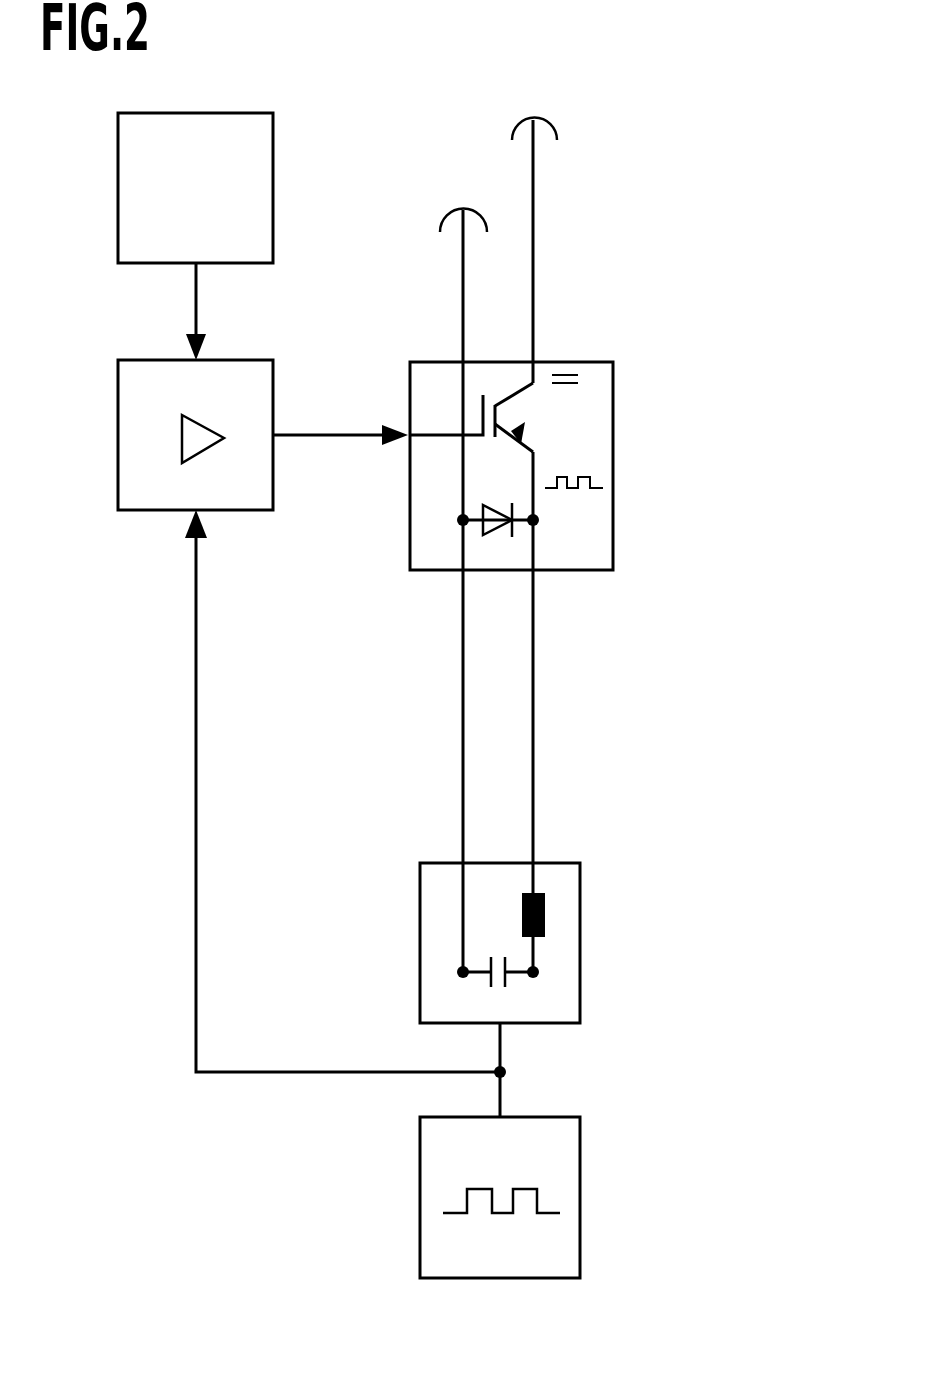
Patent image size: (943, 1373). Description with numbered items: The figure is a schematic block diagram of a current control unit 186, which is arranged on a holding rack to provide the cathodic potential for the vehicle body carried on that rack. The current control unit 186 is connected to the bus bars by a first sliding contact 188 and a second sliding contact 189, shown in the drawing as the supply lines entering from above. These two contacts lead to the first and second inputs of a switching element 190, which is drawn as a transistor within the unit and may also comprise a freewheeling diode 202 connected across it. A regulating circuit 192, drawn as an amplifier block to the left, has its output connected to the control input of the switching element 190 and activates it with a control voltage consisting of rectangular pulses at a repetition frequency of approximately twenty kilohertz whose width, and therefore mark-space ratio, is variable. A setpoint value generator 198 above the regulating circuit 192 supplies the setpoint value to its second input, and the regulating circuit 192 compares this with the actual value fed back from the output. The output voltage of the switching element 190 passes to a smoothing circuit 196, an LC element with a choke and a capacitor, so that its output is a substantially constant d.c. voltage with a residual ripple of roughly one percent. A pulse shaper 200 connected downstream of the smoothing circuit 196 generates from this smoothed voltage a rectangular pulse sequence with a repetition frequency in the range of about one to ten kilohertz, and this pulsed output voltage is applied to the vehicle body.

The setpoint value generator 198 is at (255, 153).
The regulating circuit 192 is at (253, 367).
The current control unit 186 is at (605, 355).
The switching element 190 is at (605, 437).
The second sliding contact 189 is at (447, 218).
The first sliding contact 188 is at (550, 123).
The freewheeling diode 202 is at (498, 528).
The smoothing circuit 196 is at (557, 922).
The pulse shaper 200 is at (557, 1163).